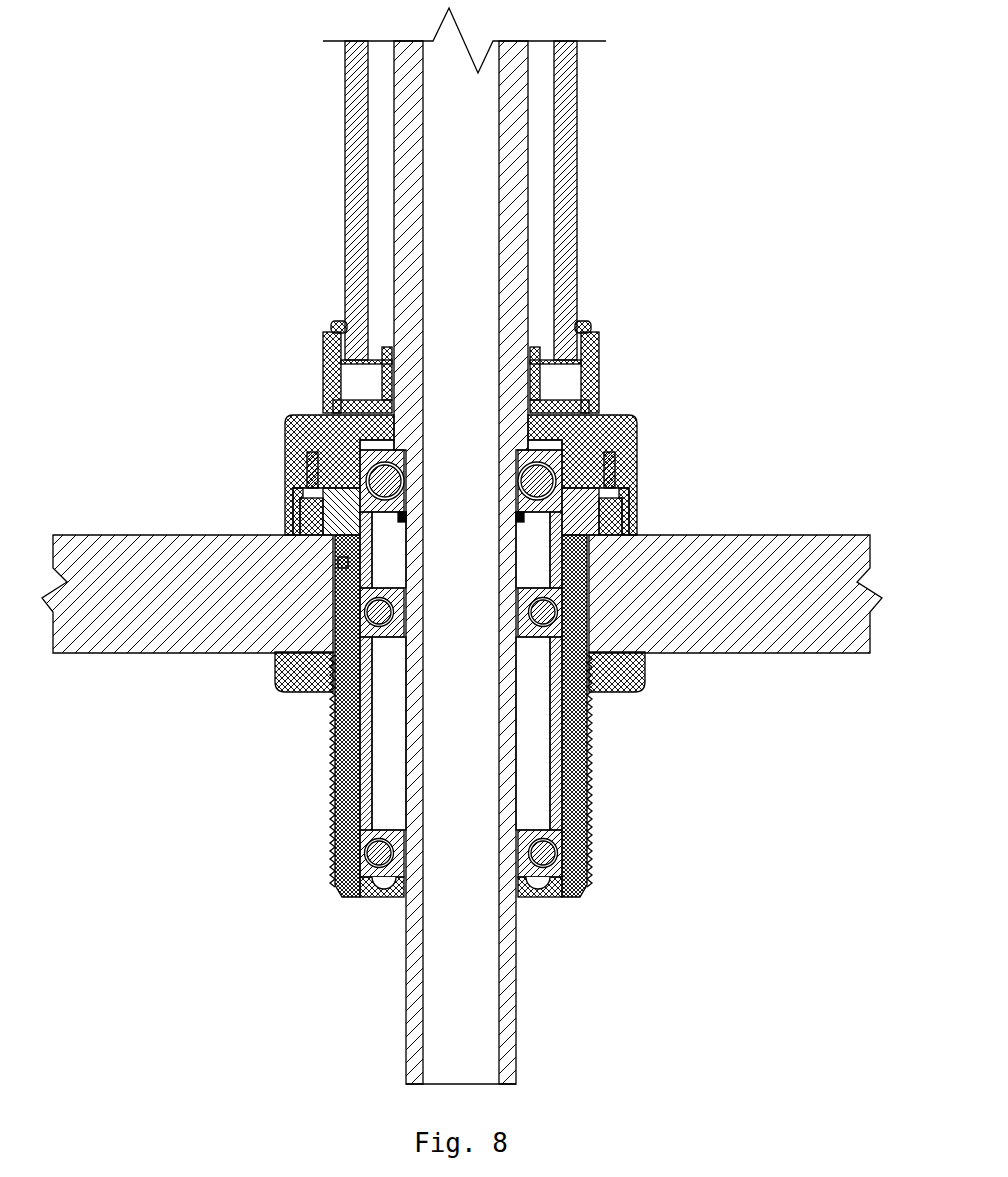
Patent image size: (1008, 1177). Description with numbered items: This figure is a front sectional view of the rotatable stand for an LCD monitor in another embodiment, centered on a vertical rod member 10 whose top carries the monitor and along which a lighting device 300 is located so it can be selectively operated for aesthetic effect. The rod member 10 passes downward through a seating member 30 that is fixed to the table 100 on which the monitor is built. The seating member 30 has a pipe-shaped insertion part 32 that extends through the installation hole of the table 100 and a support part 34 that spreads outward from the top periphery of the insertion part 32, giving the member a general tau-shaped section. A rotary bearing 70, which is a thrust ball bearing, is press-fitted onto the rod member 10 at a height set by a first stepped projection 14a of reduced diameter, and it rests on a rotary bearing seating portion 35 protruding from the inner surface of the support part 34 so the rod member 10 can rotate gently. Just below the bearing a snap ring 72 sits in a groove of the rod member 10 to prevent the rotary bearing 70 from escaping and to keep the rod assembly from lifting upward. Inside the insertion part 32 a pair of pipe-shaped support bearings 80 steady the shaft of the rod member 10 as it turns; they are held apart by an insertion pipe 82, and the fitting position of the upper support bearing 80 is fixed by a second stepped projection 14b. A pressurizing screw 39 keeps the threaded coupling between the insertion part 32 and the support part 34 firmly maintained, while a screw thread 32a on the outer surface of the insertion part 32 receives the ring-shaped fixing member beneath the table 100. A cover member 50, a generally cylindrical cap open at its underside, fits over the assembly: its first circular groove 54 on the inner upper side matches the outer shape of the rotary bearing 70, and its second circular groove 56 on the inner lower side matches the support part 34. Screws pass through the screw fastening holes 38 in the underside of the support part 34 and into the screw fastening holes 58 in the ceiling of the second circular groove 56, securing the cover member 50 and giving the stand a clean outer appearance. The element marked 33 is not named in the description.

The rod member 10 is at (516, 958).
The lighting device 300 is at (577, 190).
The table 100 is at (718, 535).
The first stepped projection 14a is at (596, 408).
The second stepped projection 14b is at (338, 727).
The cover member 50 is at (287, 414).
The first circular groove 54 is at (330, 441).
The rotary bearing seating portion 35 is at (303, 462).
The snap ring 72 is at (300, 482).
The rotary bearing 70 is at (617, 468).
The second circular groove 56 is at (290, 517).
The screw fastening holes 58 is at (622, 488).
The screw fastening holes 38 is at (637, 523).
The pressurizing screw 39 is at (338, 563).
The seating member 30 is at (736, 672).
The insertion part 32 is at (587, 712).
The screw thread 32a is at (590, 792).
The support part 34 is at (648, 660).
The support bearings 80 is at (330, 690).
The insertion pipe 82 is at (342, 792).
The retaining ring 33 is at (548, 897).